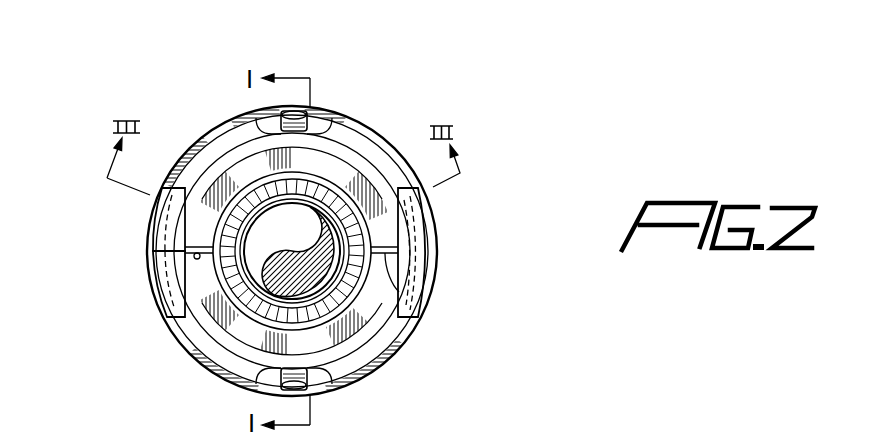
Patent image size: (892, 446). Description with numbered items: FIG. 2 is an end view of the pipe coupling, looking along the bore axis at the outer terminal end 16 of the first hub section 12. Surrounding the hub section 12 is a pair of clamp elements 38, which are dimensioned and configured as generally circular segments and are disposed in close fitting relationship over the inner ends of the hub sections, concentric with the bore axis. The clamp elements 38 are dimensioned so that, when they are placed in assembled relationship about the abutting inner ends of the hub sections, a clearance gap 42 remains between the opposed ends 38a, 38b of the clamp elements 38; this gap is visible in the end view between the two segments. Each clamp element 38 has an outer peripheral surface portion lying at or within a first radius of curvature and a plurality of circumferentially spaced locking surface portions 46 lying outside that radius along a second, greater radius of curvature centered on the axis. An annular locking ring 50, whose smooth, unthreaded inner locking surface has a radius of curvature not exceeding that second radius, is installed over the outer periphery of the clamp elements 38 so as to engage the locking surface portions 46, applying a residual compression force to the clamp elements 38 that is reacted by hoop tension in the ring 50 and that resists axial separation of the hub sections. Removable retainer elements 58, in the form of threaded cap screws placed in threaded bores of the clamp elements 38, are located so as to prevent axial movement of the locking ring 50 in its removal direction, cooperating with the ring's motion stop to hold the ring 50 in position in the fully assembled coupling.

The first hub section 12 is at (246, 193).
The annular locking ring 50 is at (238, 117).
The removable retainer elements 58 is at (320, 112).
The locking surface portions 46 is at (326, 165).
The clamp elements 38 is at (350, 150).
The opposed end of clamp element 38a is at (180, 246).
The opposed end of clamp element 38b is at (178, 275).
The clearance gap 42 is at (424, 302).
The outer terminal end 16 is at (375, 175).